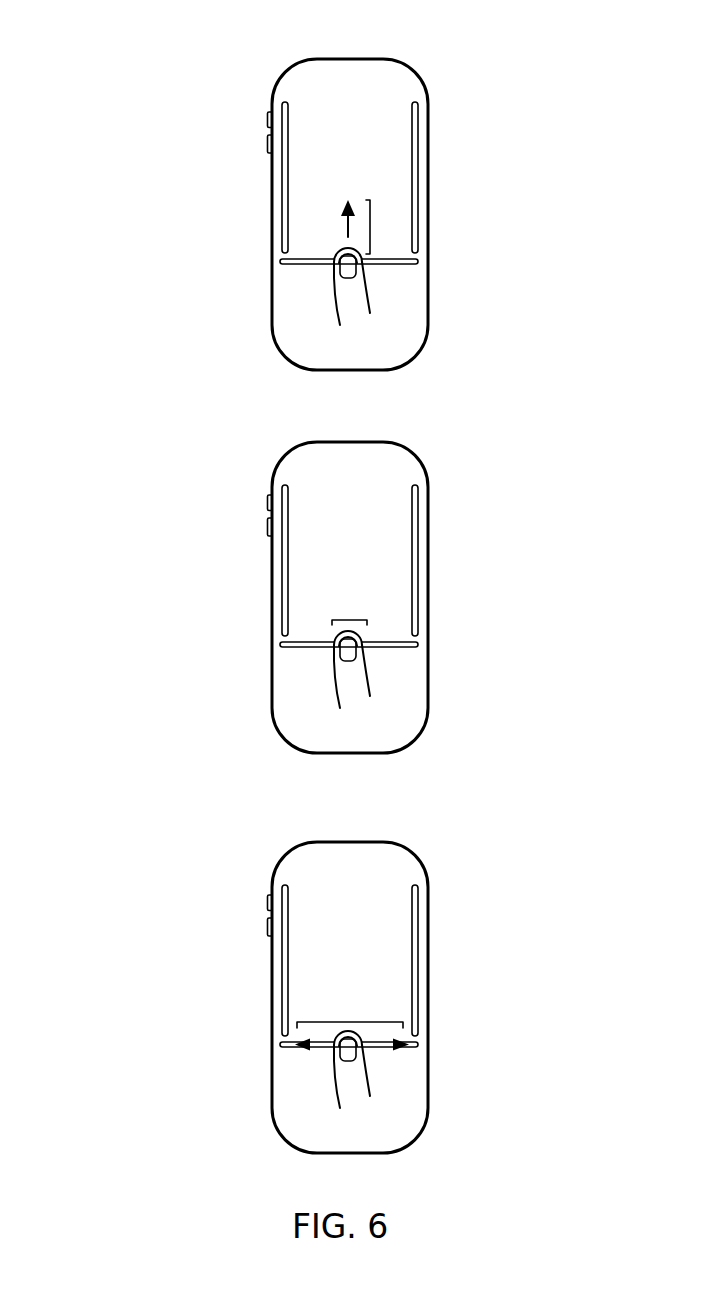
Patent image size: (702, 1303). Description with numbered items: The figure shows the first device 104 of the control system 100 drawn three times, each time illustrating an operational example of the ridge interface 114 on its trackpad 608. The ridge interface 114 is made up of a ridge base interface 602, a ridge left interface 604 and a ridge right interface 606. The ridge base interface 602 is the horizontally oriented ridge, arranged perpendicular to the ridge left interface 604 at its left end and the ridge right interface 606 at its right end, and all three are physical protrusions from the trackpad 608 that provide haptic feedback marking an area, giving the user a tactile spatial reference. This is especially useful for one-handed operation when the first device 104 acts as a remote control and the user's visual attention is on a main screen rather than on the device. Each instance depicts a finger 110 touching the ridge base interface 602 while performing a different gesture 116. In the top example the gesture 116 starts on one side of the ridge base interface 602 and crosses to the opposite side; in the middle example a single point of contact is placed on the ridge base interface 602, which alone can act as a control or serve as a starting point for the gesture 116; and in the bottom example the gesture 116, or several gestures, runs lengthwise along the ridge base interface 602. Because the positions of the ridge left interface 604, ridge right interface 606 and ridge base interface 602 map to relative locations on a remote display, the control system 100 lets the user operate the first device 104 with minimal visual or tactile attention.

The control system 100 is at (158, 52).
The first device 104 is at (261, 92).
The finger of user 110 is at (357, 290).
The ridge interface 114 is at (286, 275).
The gesture 116 is at (373, 227).
The ridge base interface 602 is at (323, 263).
The ridge left interface 604 is at (281, 188).
The ridge right interface 606 is at (418, 160).
The trackpad 608 is at (355, 145).